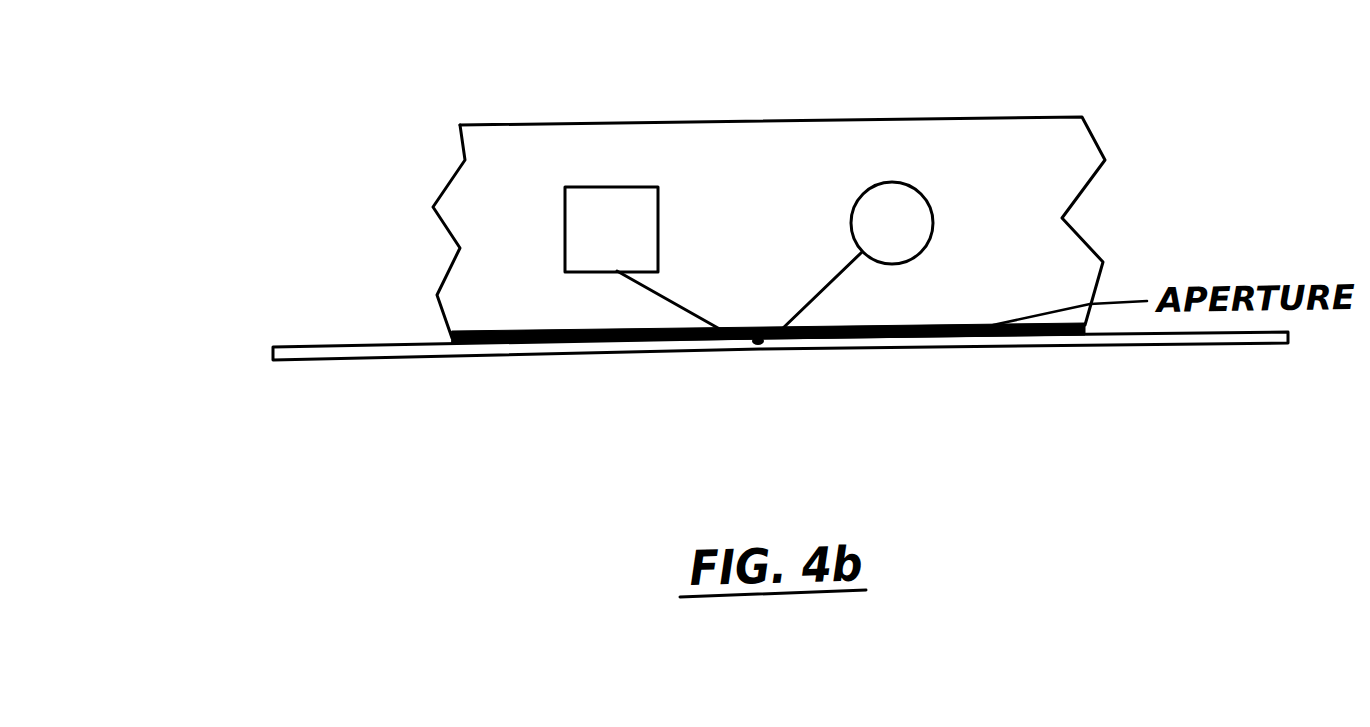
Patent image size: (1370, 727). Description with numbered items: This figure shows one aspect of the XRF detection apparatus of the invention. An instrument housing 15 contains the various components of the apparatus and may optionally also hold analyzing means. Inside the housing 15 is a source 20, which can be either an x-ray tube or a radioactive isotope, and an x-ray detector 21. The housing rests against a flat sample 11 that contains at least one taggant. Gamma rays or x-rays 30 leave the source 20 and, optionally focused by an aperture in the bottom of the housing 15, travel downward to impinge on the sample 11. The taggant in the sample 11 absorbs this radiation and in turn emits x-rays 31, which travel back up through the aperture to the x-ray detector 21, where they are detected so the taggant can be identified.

The instrument housing 15 is at (733, 132).
The x-ray detector 21 is at (600, 224).
The source 20 is at (900, 224).
The sample 11 is at (357, 350).
The x-rays 31 is at (650, 295).
The gamma rays or x-rays 30 is at (828, 285).